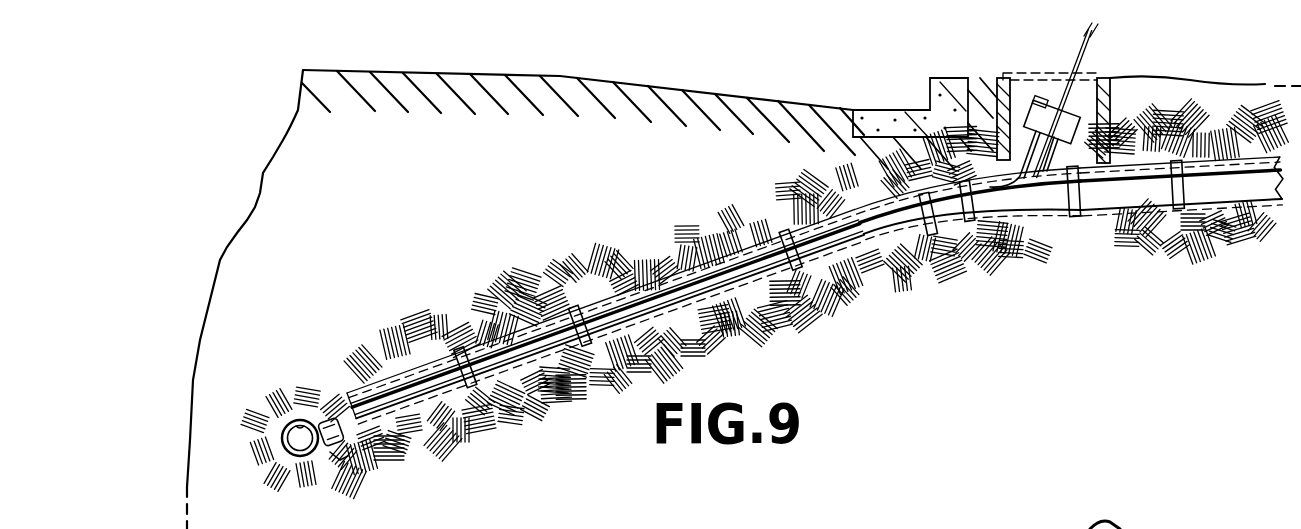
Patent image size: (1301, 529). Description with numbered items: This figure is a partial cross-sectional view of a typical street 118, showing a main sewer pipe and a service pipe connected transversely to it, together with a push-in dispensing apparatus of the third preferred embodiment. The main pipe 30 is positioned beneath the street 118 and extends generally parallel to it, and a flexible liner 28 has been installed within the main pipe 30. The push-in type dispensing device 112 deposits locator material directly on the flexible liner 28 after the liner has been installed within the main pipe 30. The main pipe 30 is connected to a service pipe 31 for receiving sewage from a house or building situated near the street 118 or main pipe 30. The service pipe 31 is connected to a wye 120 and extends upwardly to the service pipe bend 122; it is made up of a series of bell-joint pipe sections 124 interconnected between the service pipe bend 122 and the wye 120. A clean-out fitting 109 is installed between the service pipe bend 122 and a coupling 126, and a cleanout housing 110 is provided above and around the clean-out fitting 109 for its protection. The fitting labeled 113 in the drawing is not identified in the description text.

The street 118 is at (597, 78).
The cleanout housing 110 is at (1058, 73).
The push-in type dispensing device 112 is at (1088, 56).
The service pipe 31 is at (383, 362).
The clean-out fitting 109 is at (1043, 205).
The bell-joint pipe sections 124 is at (825, 207).
The service pipe bend 122 is at (925, 234).
The main pipe 30 is at (291, 412).
The flexible liner 28 is at (318, 405).
The end fitting 113 is at (343, 478).
The wye 120 is at (385, 452).
The coupling 126 is at (1135, 220).